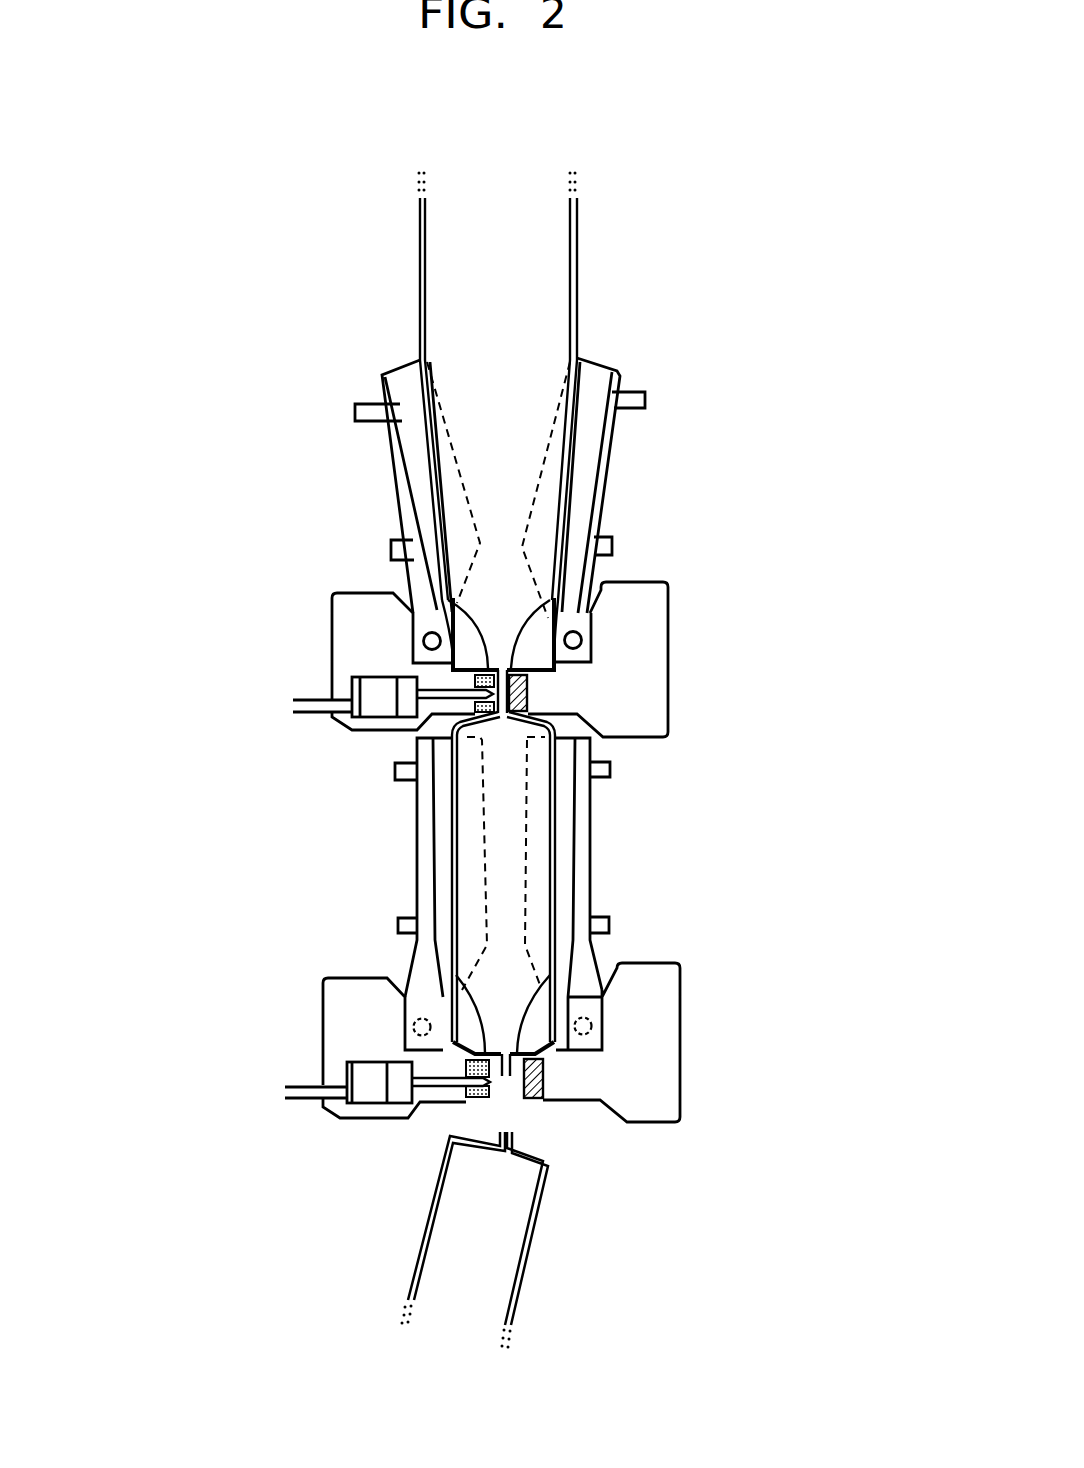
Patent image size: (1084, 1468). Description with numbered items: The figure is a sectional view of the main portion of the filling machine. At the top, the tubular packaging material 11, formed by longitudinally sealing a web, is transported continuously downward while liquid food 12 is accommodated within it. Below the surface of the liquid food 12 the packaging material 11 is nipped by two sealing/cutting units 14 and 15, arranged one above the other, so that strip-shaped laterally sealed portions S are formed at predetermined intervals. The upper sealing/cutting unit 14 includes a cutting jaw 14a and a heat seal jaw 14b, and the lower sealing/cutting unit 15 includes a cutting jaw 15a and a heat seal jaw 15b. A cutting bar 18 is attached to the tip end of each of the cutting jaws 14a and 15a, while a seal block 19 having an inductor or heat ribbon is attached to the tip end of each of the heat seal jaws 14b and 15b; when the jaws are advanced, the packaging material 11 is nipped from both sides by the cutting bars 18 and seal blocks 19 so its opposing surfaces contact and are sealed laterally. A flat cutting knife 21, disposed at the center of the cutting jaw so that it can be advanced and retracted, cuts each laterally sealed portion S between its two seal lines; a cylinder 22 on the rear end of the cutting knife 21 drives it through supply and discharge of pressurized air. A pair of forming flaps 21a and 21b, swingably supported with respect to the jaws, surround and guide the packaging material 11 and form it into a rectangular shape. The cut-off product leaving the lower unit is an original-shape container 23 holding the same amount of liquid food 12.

The tubular packaging material 11 is at (574, 241).
The liquid food 12 is at (532, 300).
The sealing/cutting unit 14 is at (674, 572).
The cutting jaw 14a is at (330, 620).
The heat seal jaw 14b is at (673, 590).
The sealing/cutting unit 15 is at (694, 957).
The cutting jaw 15a is at (323, 993).
The heat seal jaw 15b is at (683, 997).
The cutting bar 18 is at (450, 625).
The seal block 19 is at (527, 691).
The cutting knife 21 is at (440, 700).
The forming flap 21a is at (381, 377).
The forming flap 21b is at (627, 377).
The cylinder 22 is at (358, 677).
The original-shape container 23 is at (533, 1247).
The laterally sealed portion S is at (502, 661).